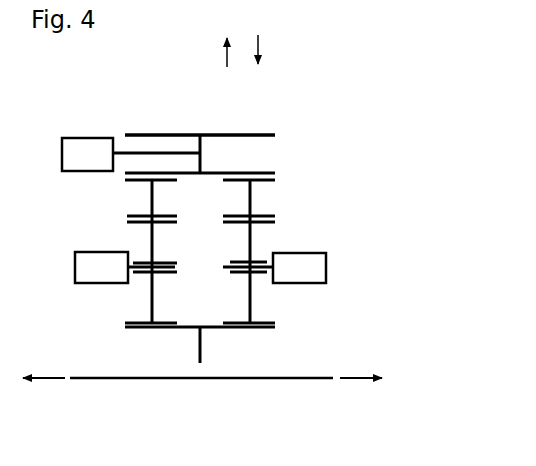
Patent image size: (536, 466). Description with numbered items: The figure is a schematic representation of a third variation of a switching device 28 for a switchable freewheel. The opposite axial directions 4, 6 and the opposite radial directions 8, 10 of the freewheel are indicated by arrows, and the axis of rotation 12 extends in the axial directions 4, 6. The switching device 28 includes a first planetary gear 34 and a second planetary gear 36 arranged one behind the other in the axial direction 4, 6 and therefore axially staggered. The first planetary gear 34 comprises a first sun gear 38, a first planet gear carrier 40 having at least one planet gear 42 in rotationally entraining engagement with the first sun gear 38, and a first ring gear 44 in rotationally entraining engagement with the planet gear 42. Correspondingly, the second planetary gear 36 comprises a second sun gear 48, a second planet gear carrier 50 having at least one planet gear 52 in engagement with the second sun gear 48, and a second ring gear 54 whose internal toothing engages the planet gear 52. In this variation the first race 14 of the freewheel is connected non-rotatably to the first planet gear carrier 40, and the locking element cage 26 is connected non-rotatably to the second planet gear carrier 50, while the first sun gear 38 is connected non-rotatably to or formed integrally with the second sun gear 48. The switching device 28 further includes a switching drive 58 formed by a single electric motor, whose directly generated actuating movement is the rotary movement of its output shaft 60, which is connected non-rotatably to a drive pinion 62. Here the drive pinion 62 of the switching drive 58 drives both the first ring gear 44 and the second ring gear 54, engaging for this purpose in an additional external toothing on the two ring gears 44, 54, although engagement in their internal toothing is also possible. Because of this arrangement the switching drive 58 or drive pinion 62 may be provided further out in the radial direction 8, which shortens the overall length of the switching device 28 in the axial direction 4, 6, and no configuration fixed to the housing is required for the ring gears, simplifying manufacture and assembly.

The axial direction 4 is at (355, 378).
The axial direction 6 is at (45, 378).
The radial direction 8 is at (225, 57).
The radial direction 10 is at (258, 47).
The axis of rotation 12 is at (277, 378).
The first race 14 is at (299, 268).
The locking element cage 26 is at (101, 267).
The switching device 28 is at (309, 131).
The first planetary gear 34 is at (255, 340).
The second planetary gear 36 is at (164, 340).
The first sun gear 38 is at (233, 329).
The first planet gear carrier 40 is at (270, 262).
The planet gear 42 is at (250, 240).
The first ring gear 44 is at (255, 216).
The second sun gear 48 is at (138, 329).
The second planet gear carrier 50 is at (132, 277).
The planet gear 52 is at (150, 242).
The second ring gear 54 is at (137, 215).
The switching drive 58 is at (87, 154).
The output shaft 60 is at (117, 150).
The drive pinion 62 is at (233, 134).